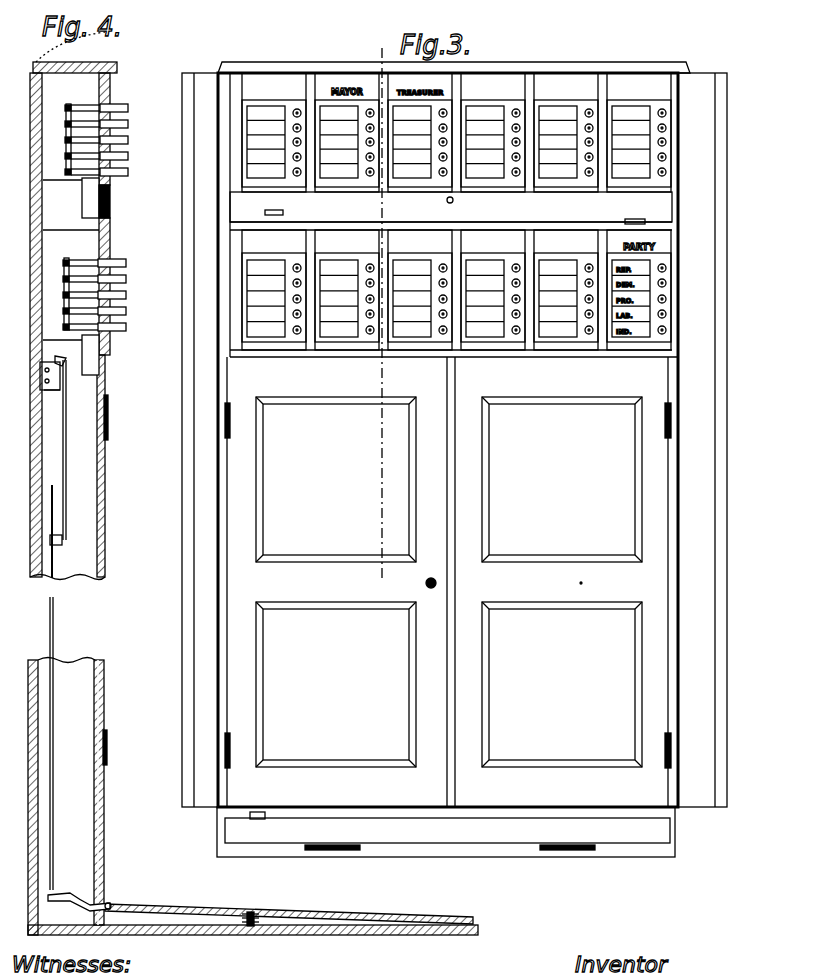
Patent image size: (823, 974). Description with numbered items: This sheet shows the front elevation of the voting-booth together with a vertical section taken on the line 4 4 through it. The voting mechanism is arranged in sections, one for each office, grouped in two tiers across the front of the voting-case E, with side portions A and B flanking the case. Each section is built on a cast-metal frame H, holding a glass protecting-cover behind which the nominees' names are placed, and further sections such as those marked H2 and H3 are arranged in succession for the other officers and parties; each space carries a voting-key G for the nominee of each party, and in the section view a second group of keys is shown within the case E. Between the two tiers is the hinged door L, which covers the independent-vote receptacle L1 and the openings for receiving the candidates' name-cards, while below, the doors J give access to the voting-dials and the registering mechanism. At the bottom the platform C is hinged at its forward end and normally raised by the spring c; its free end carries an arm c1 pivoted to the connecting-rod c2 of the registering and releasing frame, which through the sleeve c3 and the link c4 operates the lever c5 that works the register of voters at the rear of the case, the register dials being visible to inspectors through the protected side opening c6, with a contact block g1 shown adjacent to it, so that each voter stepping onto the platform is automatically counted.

In FIG. 3, the left side casing panel A is at (183, 561).
In FIG. 3, the right side casing panel B is at (702, 440).
In FIG. 3, the platform C is at (283, 908).
In FIG. 3, the spring c is at (250, 928).
In FIG. 4, the arm c1 is at (79, 910).
In FIG. 4, the connecting-rod c2 is at (55, 740).
In FIG. 4, the sleeve c3 is at (60, 543).
In FIG. 4, the link c4 is at (56, 490).
In FIG. 4, the lever c5 is at (56, 360).
In FIG. 4, the side opening c6 is at (45, 392).
In FIG. 4, the contact block g1 is at (40, 382).
In FIG. 3, the voting-keys G is at (298, 110).
In FIG. 4, the voting-keys G is at (128, 125).
In FIG. 4, the voting-case E is at (32, 294).
In FIG. 3, the frame H is at (493, 132).
In FIG. 3, the candidate ballot column H2 is at (392, 244).
In FIG. 3, the candidate ballot column H3 is at (538, 86).
In FIG. 3, the hinged door L is at (451, 208).
In FIG. 4, the hinged door L is at (110, 212).
In FIG. 4, the independent-vote receptacle L1 is at (82, 205).
In FIG. 3, the doors J is at (449, 582).
In FIG. 4, the doors J is at (104, 816).
In FIG. 3, the section line 4 is at (375, 315).